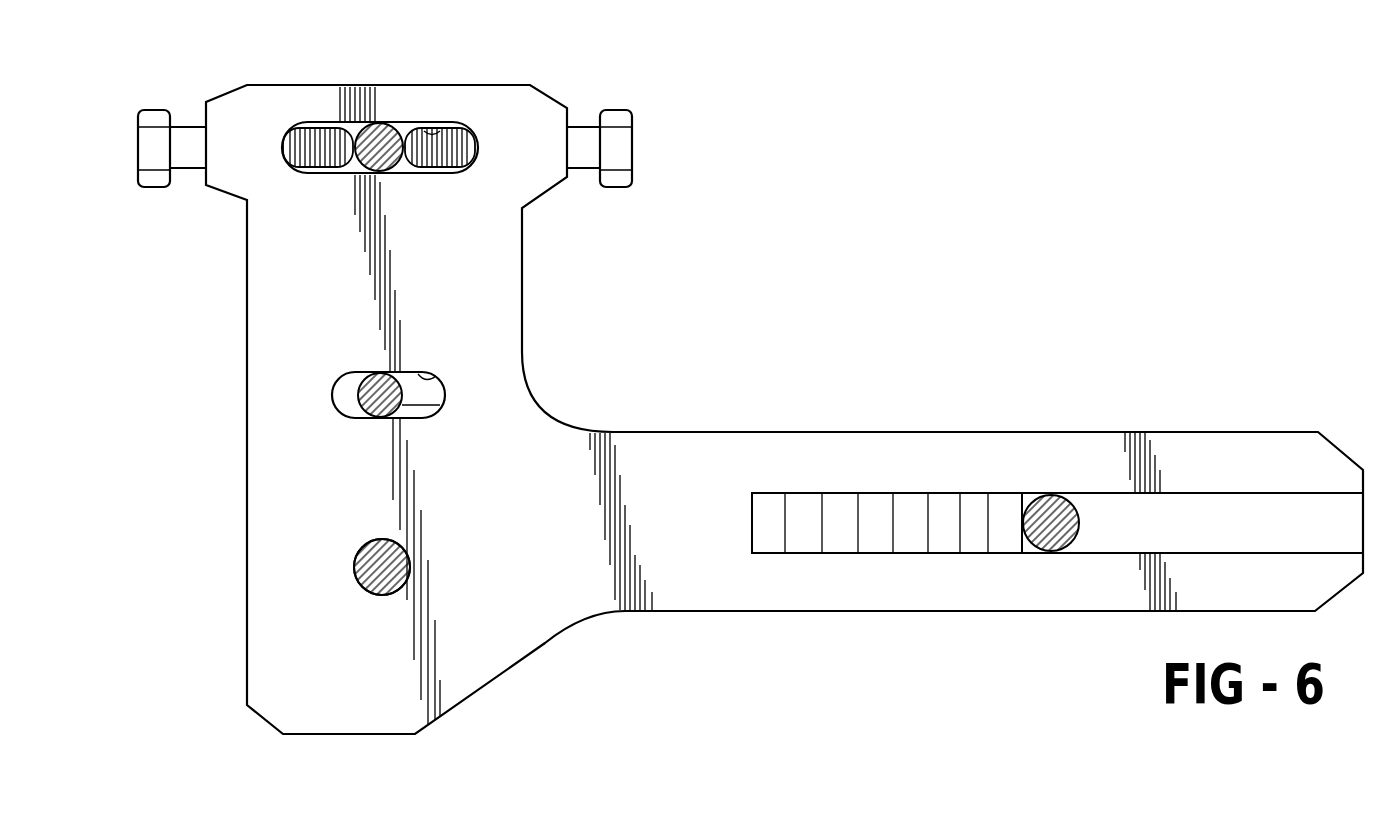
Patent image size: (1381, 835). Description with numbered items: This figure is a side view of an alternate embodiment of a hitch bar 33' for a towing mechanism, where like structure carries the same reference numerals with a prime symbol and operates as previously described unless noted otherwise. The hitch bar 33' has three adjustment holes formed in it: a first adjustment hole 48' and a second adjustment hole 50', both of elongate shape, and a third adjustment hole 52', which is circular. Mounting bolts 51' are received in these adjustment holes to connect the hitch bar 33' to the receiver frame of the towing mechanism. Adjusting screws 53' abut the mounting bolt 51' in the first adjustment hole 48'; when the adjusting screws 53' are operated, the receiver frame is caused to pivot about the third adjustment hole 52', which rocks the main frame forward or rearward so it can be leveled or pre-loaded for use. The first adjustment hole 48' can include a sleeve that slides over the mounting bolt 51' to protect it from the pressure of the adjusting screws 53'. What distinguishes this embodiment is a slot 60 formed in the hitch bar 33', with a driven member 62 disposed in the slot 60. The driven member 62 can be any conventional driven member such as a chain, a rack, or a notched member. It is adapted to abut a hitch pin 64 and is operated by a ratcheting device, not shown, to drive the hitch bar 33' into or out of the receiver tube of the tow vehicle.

The hitch bar 33' is at (745, 409).
The first adjustment hole 48' is at (387, 104).
The second adjustment hole 50' is at (464, 352).
The mounting bolt 51' is at (390, 309).
The third adjustment hole 52' is at (294, 536).
The adjusting screw 53' is at (392, 126).
The slot 60 is at (1195, 495).
The driven member 62 is at (912, 510).
The hitch pin 64 is at (1075, 495).